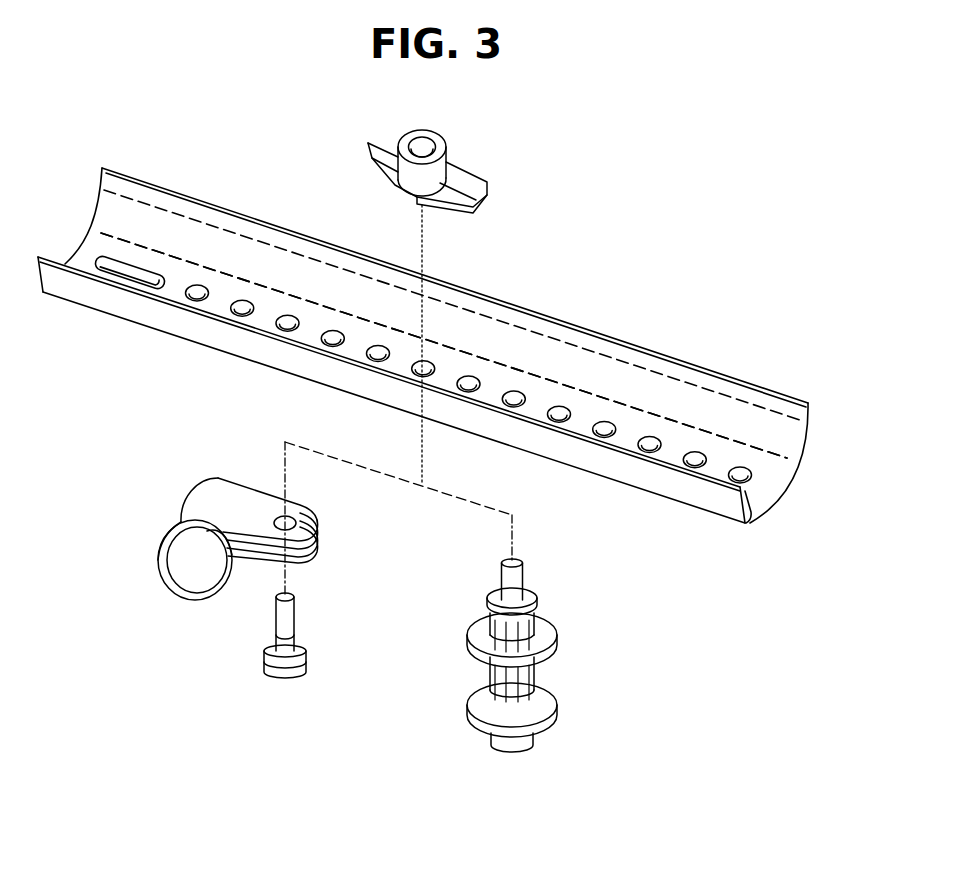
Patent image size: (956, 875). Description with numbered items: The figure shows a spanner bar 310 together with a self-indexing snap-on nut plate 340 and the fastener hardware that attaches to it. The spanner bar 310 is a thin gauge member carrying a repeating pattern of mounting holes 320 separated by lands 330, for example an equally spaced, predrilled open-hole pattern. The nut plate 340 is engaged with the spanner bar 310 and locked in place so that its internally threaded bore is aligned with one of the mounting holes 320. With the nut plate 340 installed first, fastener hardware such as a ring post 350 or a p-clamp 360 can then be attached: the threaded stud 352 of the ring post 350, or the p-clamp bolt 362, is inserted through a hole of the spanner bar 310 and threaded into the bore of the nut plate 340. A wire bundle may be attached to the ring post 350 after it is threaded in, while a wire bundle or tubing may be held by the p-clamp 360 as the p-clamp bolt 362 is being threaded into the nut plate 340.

The spanner bar 310 is at (737, 378).
The mounting holes 320 is at (473, 383).
The lands 330 is at (487, 392).
The self-indexing nut plate 340 is at (447, 144).
The ring post 350 is at (553, 722).
The threaded stud 352 is at (520, 562).
The p-clamp 360 is at (175, 582).
The p-clamp bolt 362 is at (297, 675).